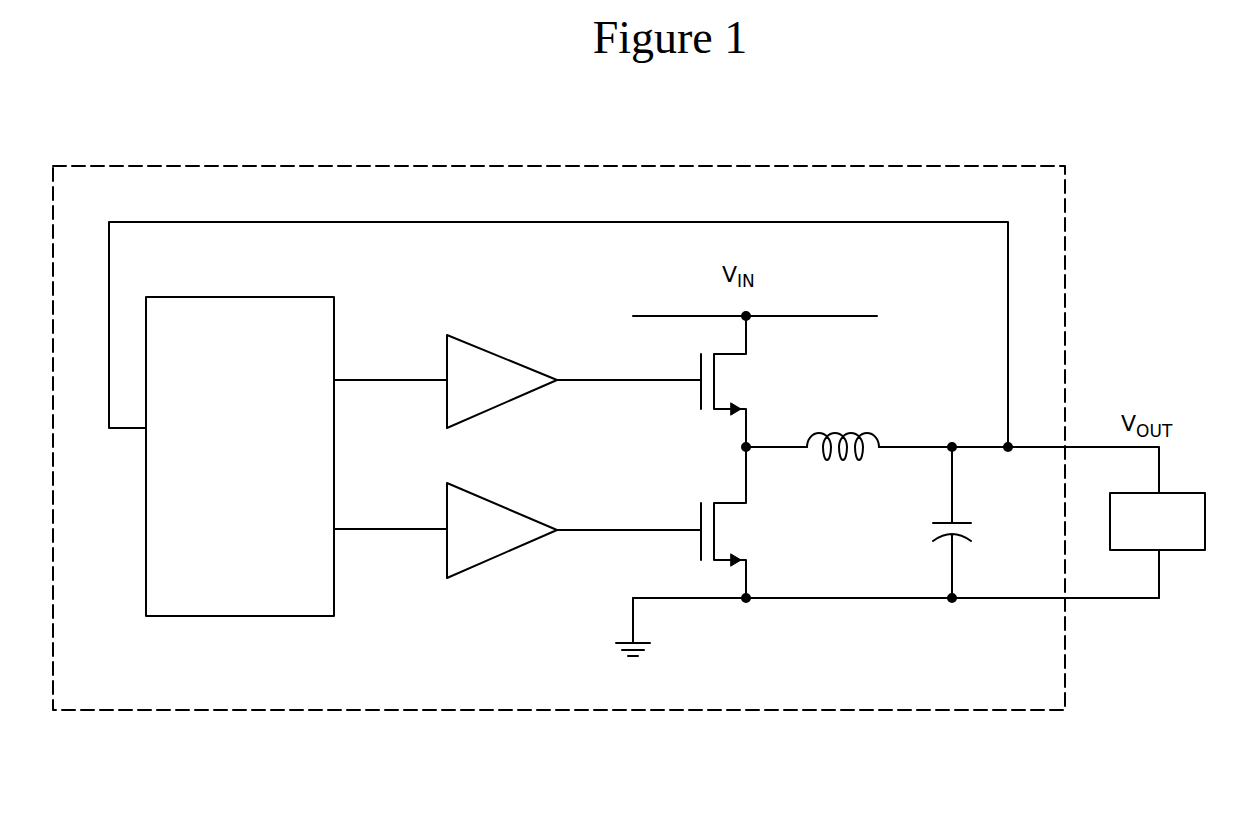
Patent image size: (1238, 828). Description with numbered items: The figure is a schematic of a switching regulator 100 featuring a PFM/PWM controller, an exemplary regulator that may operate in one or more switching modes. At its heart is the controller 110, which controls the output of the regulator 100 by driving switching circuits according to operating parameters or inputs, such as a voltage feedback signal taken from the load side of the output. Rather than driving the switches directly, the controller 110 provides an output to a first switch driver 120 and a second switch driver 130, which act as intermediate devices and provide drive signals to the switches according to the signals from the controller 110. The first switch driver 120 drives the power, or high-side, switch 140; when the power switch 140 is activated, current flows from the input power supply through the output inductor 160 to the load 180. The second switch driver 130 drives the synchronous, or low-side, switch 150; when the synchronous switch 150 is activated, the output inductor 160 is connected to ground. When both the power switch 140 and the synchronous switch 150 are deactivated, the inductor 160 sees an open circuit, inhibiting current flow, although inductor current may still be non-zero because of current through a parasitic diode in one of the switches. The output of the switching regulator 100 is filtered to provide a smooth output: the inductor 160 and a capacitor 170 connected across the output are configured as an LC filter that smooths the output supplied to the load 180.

The switching regulator 100 is at (183, 165).
The controller 110 is at (240, 456).
The first switch driver 120 is at (502, 381).
The second switch driver 130 is at (502, 530).
The power switch 140 is at (695, 374).
The synchronous switch 150 is at (695, 523).
The output inductor 160 is at (856, 432).
The capacitor 170 is at (935, 533).
The load 180 is at (1157, 521).